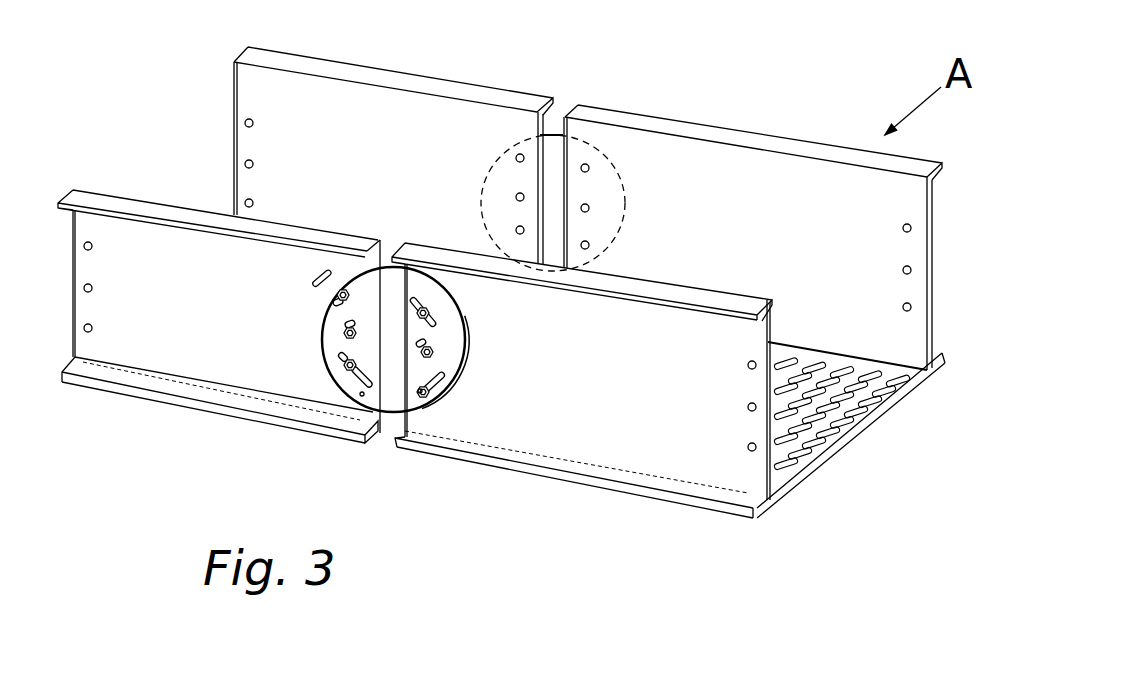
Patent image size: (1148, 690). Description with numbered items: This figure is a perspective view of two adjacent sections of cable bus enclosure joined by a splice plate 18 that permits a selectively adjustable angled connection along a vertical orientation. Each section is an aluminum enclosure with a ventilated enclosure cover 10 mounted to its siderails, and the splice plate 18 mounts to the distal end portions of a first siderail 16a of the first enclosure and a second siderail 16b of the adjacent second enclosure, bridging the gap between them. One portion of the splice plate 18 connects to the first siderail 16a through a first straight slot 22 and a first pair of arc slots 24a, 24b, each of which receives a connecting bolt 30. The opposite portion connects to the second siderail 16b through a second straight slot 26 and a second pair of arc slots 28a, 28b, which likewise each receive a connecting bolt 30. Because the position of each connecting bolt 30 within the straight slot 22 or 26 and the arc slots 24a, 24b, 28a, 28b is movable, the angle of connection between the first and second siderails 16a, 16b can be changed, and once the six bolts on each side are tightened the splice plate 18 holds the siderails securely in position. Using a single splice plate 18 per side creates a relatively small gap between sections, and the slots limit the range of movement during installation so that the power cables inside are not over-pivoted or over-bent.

The ventilated enclosure cover 10 is at (842, 432).
The first siderail 16a is at (778, 168).
The second siderail 16b is at (367, 122).
The splice plate 18 is at (555, 128).
The first straight slot 22 is at (430, 342).
The first arc slot 24a is at (442, 323).
The first arc slot 24b is at (443, 380).
The second straight slot 26 is at (350, 328).
The second arc slot 28a is at (362, 285).
The second arc slot 28b is at (347, 360).
The connecting bolt 30 is at (420, 390).